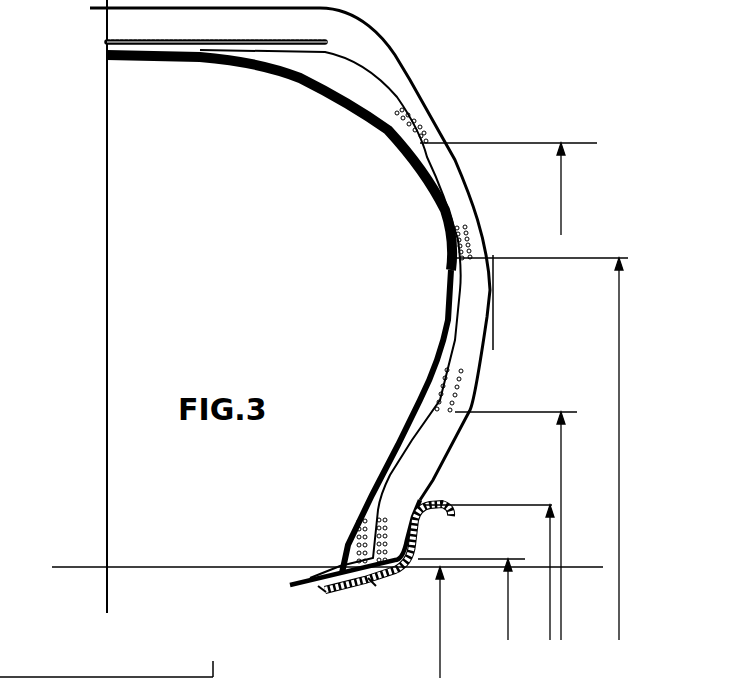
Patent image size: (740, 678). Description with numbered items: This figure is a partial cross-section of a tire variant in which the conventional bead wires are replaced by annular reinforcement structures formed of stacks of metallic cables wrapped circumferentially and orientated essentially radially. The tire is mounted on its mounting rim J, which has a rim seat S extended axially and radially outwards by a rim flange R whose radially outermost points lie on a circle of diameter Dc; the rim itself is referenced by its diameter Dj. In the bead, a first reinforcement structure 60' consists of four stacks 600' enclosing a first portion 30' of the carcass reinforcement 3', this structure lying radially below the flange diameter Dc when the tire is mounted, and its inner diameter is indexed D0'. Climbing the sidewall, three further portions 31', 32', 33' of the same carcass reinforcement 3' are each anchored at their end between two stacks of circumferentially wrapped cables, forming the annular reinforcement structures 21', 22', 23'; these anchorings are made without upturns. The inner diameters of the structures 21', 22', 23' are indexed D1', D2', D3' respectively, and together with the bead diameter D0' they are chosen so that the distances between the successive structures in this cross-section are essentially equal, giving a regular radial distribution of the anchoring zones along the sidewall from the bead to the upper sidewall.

The carcass reinforcement 3' is at (290, 254).
The carcass reinforcement portion 33' is at (435, 109).
The annular reinforcement structure 23' is at (508, 117).
The carcass reinforcement portion 32' is at (492, 217).
The annular reinforcement structure 22' is at (490, 250).
The annular reinforcement structure 21' is at (467, 390).
The carcass reinforcement portion 31' is at (509, 322).
The carcass reinforcement portion 30' is at (330, 314).
The annular reinforcement structure of the bead 60' is at (333, 540).
The stacks of metallic cables 600' is at (323, 552).
The mounting rim J is at (315, 590).
The rim seat S is at (372, 583).
The rim flange R is at (425, 527).
The inner diameter of annular reinforcement structure 23' D3' is at (586, 189).
The inner diameter of annular reinforcement structure 22' D2' is at (596, 449).
The inner diameter of annular reinforcement structure 21' D1' is at (542, 526).
The rim flange diameter Dc is at (489, 572).
The inner diameter of bead structure D0' is at (471, 599).
The rim diameter Dj is at (427, 622).